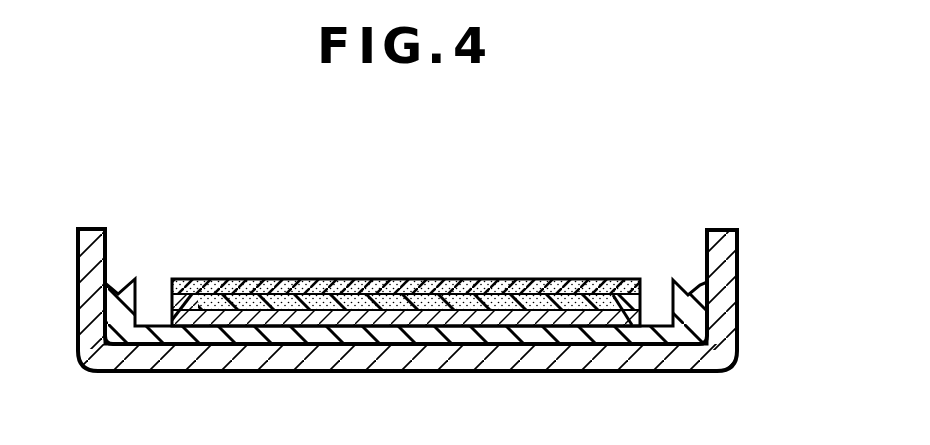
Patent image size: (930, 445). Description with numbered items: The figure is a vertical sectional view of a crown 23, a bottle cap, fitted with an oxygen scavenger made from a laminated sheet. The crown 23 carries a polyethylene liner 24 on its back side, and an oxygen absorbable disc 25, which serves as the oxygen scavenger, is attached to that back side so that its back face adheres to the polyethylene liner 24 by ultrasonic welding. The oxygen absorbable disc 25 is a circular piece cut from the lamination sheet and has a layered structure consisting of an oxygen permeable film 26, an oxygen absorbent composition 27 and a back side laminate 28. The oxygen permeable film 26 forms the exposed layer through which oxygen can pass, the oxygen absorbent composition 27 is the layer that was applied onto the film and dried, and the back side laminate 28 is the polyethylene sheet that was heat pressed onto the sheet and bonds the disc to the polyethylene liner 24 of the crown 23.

The crown 23 is at (725, 270).
The polyethylene liner 24 is at (697, 330).
The oxygen absorbable disc 25 is at (375, 270).
The oxygen permeable film 26 is at (480, 281).
The oxygen absorbent composition 27 is at (553, 284).
The back side laminate 28 is at (170, 307).